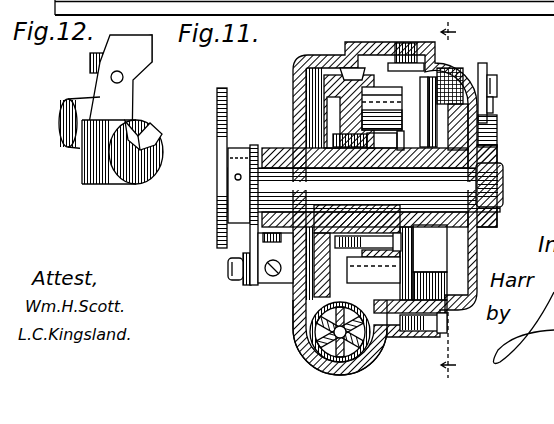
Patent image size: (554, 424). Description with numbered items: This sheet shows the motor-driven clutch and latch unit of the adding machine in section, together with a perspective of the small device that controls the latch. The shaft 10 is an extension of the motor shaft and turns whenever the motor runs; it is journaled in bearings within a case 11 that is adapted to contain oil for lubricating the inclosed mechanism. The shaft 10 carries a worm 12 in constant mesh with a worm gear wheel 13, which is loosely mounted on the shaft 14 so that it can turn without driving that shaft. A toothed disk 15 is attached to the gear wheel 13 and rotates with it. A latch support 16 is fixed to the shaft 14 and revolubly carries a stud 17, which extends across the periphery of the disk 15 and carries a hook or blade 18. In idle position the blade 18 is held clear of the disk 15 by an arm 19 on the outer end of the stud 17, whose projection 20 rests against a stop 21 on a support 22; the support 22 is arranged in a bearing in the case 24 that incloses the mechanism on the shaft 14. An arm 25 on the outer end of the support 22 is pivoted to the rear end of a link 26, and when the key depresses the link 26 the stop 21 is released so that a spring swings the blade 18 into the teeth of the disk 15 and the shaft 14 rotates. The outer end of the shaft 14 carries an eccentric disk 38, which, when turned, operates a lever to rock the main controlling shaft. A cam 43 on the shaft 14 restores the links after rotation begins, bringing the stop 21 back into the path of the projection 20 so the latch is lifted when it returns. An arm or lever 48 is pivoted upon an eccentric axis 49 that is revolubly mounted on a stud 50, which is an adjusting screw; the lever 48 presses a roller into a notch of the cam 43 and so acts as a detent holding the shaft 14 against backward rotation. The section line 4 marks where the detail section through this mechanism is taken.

In FIG. 11, the section line 4— 4 is at (448, 207).
In FIG. 11, the shaft 10 is at (312, 337).
In FIG. 11, the case 11 is at (357, 362).
In FIG. 11, the worm 12 is at (315, 365).
In FIG. 11, the worm gear wheel 13 is at (295, 82).
In FIG. 11, the shaft 14 is at (280, 183).
In FIG. 11, the disk 15 is at (400, 266).
In FIG. 11, the latch support 16 is at (402, 268).
In FIG. 11, the stud 17 is at (377, 97).
In FIG. 11, the hook or blade 18 is at (372, 152).
In FIG. 11, the arm 19 is at (418, 126).
In FIG. 11, the projection 20 is at (503, 186).
In FIG. 12, the stop 21 is at (148, 138).
In FIG. 11, the stop 21 is at (460, 97).
In FIG. 12, the support 22 is at (100, 152).
In FIG. 11, the support 22 is at (487, 132).
In FIG. 11, the case 24 is at (478, 250).
In FIG. 12, the arm 25 is at (126, 99).
In FIG. 11, the arm 25 is at (491, 103).
In FIG. 12, the link 26 is at (152, 59).
In FIG. 11, the link 26 is at (494, 80).
In FIG. 11, the eccentric disk 38 is at (222, 144).
In FIG. 11, the cam 43 is at (253, 230).
In FIG. 11, the arm or lever 48 is at (254, 282).
In FIG. 11, the eccentric axis 49 is at (245, 280).
In FIG. 11, the stud 50 is at (230, 274).